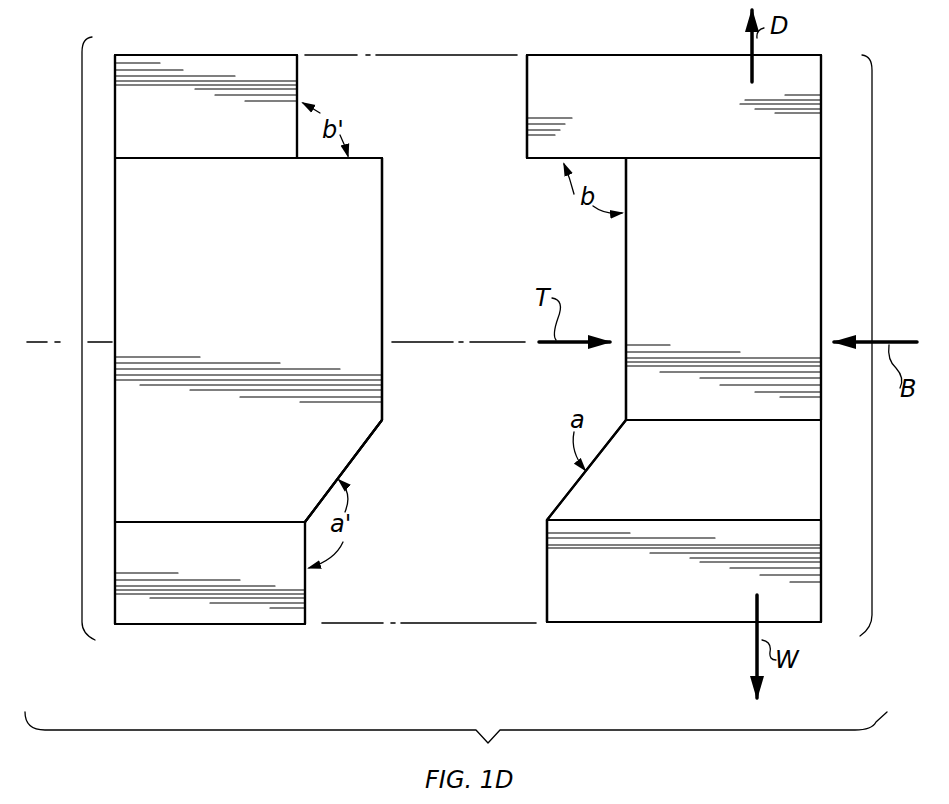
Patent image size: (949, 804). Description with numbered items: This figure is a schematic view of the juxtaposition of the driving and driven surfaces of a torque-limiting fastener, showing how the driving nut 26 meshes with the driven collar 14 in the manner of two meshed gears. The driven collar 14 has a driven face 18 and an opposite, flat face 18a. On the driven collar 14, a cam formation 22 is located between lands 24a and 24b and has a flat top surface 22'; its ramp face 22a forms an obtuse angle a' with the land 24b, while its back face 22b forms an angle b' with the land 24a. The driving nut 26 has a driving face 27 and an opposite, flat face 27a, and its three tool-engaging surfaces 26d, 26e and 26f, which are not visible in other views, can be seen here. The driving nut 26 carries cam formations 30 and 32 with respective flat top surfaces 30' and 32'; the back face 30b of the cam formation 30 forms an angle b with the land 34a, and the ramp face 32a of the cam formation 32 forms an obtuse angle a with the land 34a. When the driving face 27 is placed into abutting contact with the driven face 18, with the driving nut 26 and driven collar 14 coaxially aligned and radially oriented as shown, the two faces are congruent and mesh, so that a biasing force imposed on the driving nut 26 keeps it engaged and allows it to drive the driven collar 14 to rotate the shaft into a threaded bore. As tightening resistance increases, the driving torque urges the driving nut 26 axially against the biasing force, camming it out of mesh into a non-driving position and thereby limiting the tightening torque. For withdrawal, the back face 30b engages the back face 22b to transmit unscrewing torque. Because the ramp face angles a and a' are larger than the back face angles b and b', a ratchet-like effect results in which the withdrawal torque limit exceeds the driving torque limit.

The driven collar 14 is at (232, 632).
The driven face 18 is at (423, 223).
The flat face 18a is at (76, 334).
The cam formation 22 is at (273, 340).
The ramp face 22a is at (429, 484).
The back face 22b is at (318, 160).
The flat top surface 22' is at (353, 289).
The land 24a is at (362, 101).
The land 24b is at (389, 587).
The driving nut 26 is at (723, 631).
The tool-engaging surface 26d is at (681, 513).
The tool-engaging surface 26e is at (710, 322).
The tool-engaging surface 26f is at (718, 96).
The driving face 27 is at (537, 216).
The flat face 27a is at (940, 283).
The cam formation 30 is at (674, 84).
The flat top surface 30' is at (488, 106).
The back face 30b is at (648, 134).
The cam formation 32 is at (670, 600).
The ramp face 32a is at (571, 497).
The flat top surface 32' is at (506, 571).
The land 34a is at (684, 263).